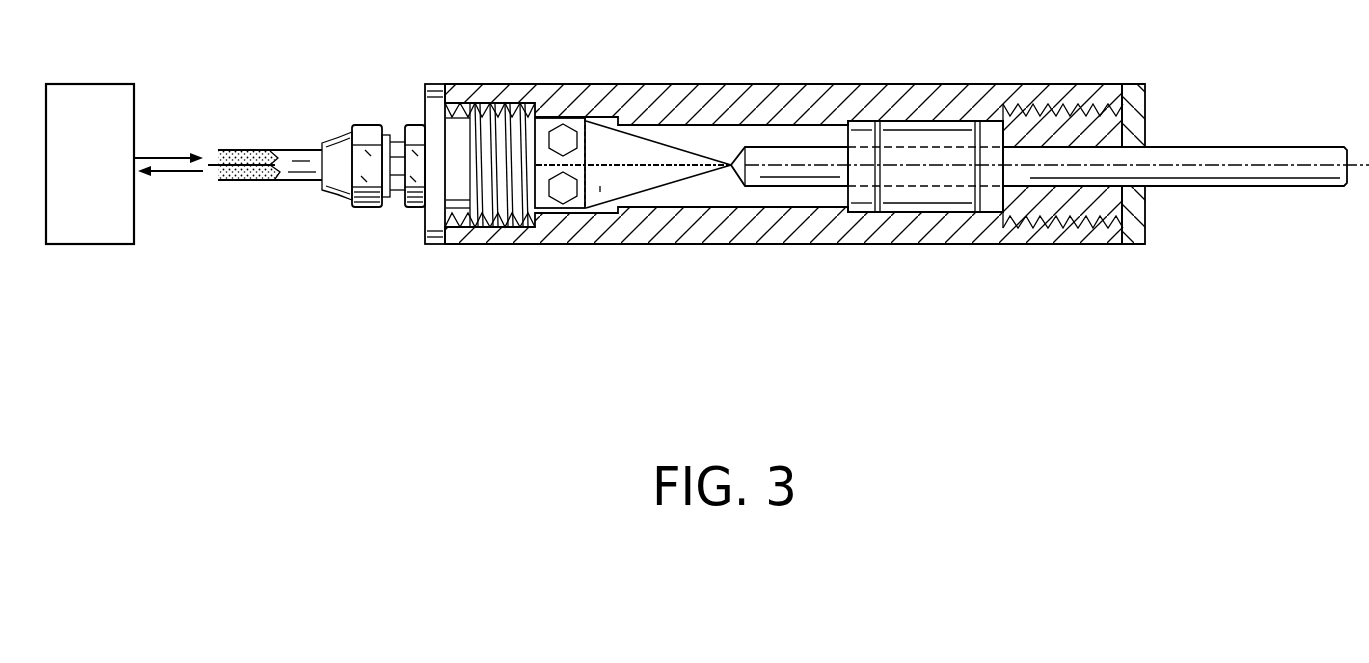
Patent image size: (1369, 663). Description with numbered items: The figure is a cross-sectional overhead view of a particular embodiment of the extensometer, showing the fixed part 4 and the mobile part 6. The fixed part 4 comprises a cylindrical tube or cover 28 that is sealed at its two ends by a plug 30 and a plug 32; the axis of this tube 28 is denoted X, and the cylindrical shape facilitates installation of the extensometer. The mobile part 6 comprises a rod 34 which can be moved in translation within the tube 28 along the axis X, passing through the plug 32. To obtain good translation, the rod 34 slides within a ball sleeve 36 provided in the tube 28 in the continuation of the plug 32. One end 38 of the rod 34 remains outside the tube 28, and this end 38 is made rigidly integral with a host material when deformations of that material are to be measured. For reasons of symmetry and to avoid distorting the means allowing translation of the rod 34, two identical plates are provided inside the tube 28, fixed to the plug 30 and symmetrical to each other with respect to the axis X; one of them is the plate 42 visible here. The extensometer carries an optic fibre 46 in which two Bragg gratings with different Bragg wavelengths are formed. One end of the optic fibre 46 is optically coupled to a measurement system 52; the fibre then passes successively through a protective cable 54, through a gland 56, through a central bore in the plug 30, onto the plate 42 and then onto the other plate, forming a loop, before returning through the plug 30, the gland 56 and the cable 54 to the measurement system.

The fixed part 4 is at (698, 72).
The mobile part 6 is at (1277, 122).
The tube 28 is at (963, 108).
The plug 30 is at (458, 110).
The plug 32 is at (1123, 202).
The rod 34 is at (788, 180).
The ball sleeve 36 is at (940, 199).
The end of the rod 38 is at (1189, 145).
The plate 42 is at (609, 183).
The optic fibre 46 is at (240, 180).
The measurement system 52 is at (82, 233).
The protective cable 54 is at (288, 155).
The gland 56 is at (388, 132).
The axis X is at (1368, 166).